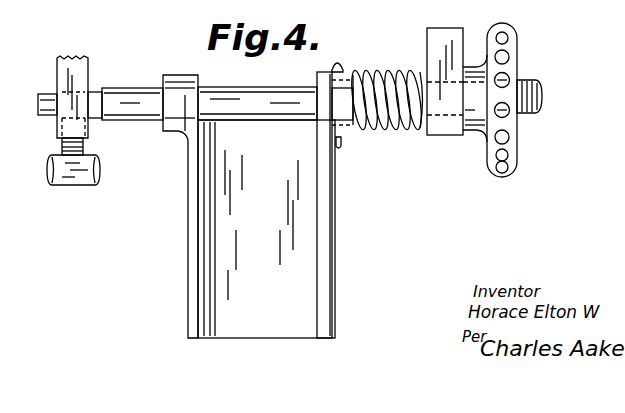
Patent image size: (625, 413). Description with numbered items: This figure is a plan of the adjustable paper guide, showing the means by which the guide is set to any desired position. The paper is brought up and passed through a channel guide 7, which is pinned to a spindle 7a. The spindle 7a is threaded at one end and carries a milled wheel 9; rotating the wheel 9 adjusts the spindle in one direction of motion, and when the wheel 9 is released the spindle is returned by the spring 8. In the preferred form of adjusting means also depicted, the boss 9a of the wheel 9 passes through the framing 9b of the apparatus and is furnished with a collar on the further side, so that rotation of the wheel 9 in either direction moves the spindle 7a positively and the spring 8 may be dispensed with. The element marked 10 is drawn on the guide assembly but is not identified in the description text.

The channel guide 7 is at (253, 200).
The spindle 7a is at (543, 95).
The spring 8 is at (395, 123).
The milled wheel 9 is at (502, 167).
The boss 9a is at (477, 135).
The framing 9b is at (438, 128).
The clamp bolt knob 10 is at (85, 180).